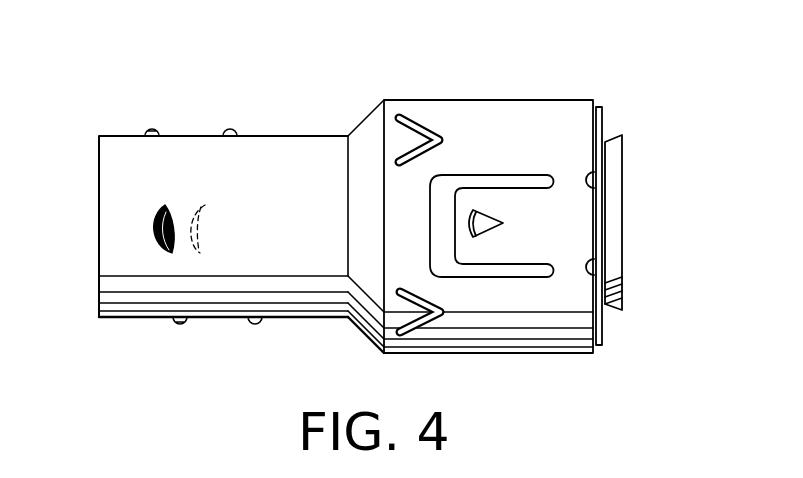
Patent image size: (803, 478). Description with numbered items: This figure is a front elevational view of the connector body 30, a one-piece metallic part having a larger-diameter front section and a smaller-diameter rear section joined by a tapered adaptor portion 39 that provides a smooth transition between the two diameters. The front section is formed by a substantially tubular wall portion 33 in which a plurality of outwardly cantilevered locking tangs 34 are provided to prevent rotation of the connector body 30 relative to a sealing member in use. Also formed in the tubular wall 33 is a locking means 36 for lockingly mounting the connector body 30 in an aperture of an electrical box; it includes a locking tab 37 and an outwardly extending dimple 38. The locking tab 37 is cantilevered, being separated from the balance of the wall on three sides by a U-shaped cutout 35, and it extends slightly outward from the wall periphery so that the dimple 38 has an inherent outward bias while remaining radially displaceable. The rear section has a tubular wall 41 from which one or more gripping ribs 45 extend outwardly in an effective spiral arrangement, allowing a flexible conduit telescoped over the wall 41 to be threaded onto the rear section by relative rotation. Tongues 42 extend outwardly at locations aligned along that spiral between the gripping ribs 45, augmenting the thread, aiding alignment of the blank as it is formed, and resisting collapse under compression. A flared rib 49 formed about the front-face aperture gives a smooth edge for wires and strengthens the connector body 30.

The connector body 30 is at (278, 95).
The tubular wall portion 33 is at (524, 112).
The locking tangs 34 is at (410, 136).
The U-shaped cutout 35 is at (455, 186).
The locking means 36 is at (547, 174).
The locking tab 37 is at (500, 250).
The dimple 38 is at (482, 234).
The adaptor portion 39 is at (357, 125).
The tubular wall 41 is at (207, 287).
The tongues 42 is at (230, 129).
The gripping ribs 45 is at (153, 228).
The flared rib 49 is at (610, 312).